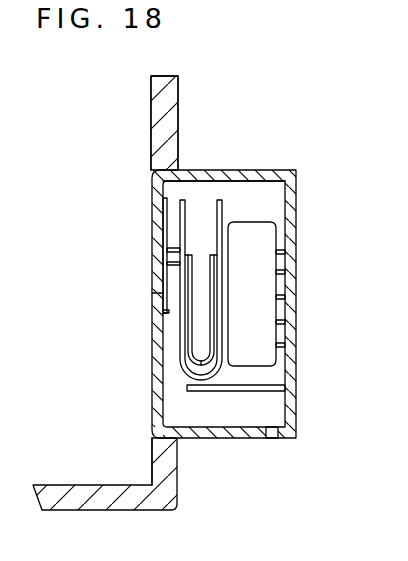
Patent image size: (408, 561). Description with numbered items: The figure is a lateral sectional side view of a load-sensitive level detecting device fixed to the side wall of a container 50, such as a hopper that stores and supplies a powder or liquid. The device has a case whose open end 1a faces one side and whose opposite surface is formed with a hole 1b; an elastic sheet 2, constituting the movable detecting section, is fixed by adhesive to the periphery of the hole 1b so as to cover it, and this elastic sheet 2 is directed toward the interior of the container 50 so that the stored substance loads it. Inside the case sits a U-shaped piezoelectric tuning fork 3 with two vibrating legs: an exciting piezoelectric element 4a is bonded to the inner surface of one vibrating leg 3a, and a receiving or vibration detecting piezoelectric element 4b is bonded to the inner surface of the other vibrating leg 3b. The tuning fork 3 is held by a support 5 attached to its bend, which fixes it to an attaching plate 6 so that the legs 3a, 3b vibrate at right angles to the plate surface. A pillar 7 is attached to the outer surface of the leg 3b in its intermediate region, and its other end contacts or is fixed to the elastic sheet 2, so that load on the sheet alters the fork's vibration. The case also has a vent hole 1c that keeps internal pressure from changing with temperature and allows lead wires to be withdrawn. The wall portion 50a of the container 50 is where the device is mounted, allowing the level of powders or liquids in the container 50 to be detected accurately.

The open end 1a is at (290, 184).
The hole 1b is at (157, 283).
The vent hole 1c is at (271, 440).
The elastic sheet 2 is at (165, 263).
The U-shaped piezoelectric tuning fork 3 is at (181, 362).
The vibrating leg 3a is at (223, 204).
The vibrating leg 3b is at (163, 200).
The exciting piezoelectric element 4a is at (211, 255).
The receiving piezoelectric element 4b is at (190, 255).
The support 5 is at (235, 393).
The attaching plate 6 is at (298, 359).
The pillar 7 is at (176, 249).
The container 50 is at (135, 512).
The bracket abutment face 50a is at (151, 437).